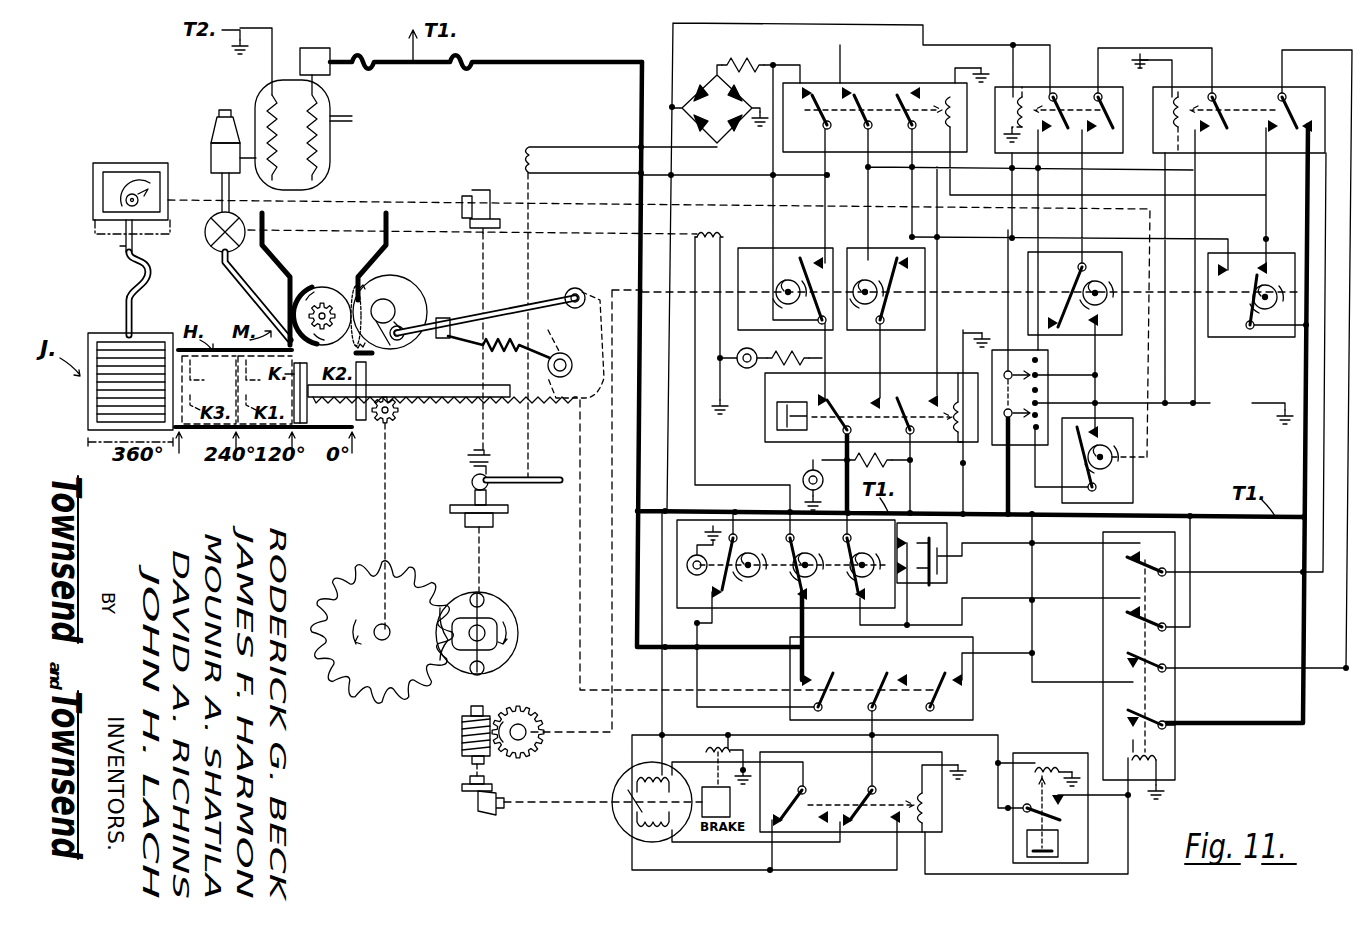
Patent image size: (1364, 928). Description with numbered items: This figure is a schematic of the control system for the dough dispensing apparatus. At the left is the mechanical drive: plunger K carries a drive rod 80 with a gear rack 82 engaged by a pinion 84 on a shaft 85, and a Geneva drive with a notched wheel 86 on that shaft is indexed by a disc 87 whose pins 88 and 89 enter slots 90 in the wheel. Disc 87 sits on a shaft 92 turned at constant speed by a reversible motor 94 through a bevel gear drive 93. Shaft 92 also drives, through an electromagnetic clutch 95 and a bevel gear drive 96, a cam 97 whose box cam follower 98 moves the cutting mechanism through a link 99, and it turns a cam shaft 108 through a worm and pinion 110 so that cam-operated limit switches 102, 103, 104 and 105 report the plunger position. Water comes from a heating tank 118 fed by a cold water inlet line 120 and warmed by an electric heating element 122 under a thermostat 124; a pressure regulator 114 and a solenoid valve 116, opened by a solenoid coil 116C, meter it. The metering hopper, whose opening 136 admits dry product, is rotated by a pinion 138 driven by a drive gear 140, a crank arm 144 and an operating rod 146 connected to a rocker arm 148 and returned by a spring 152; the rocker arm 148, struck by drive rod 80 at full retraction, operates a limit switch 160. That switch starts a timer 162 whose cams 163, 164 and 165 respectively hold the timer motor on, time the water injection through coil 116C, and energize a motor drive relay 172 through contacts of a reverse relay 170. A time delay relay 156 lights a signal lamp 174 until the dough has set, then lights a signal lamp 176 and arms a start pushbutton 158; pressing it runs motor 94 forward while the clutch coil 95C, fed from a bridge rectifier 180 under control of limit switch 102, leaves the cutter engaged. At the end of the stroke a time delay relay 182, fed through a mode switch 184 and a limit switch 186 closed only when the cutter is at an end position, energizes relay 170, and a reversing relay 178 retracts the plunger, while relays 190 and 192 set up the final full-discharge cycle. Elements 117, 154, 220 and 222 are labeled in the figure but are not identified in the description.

The drive rod 80 is at (418, 390).
The gear rack 82 is at (445, 414).
The pinion 84 is at (402, 414).
The shaft 85 is at (385, 448).
The notched wheel 86 is at (355, 700).
The disc 87 is at (512, 612).
The pin 88 is at (482, 594).
The pin 89 is at (490, 671).
The slots 90 is at (428, 696).
The shaft 92 is at (478, 706).
The bevel gear drive 93 is at (466, 796).
The motor 94 is at (614, 818).
The electromagnetic clutch 95 is at (462, 500).
The clutch solenoid coil 95C is at (533, 149).
The bevel gear drive 96 is at (462, 199).
The cam 97 is at (128, 181).
The box cam follower 98 is at (100, 186).
The link 99 is at (91, 289).
The limit switch 102 is at (816, 330).
The limit switch 103 is at (898, 330).
The limit switch 104 is at (1112, 333).
The limit switch 105 is at (1262, 338).
The cam shaft 108 is at (628, 290).
The worm and pinion 110 is at (462, 740).
The pressure regulator 114 is at (221, 132).
The solenoid valve 116 is at (214, 248).
The solenoid coil 116C is at (712, 232).
The conduit 117 is at (224, 272).
The water heating tank 118 is at (321, 156).
The cold water inlet line 120 is at (358, 119).
The electric heating element 122 is at (314, 138).
The thermostat 124 is at (320, 68).
The opening 136 is at (284, 296).
The pinion 138 is at (320, 302).
The drive gear 140 is at (384, 282).
The crank arm 144 is at (393, 310).
The operating rod 146 is at (478, 316).
The rocker arm 148 is at (568, 292).
The spring 152 is at (491, 362).
The lever 154 is at (555, 398).
The time delay relay 156 is at (766, 432).
The start pushbutton 158 is at (947, 568).
The limit switch 160 is at (790, 672).
The timer 162 is at (768, 607).
The timer cam 163 is at (747, 563).
The timer cam 164 is at (814, 564).
The timer cam 165 is at (871, 564).
The reverse relay 170 is at (1103, 708).
The motor drive relay 172 is at (880, 86).
The signal lamp 174 is at (771, 370).
The signal lamp 176 is at (804, 478).
The reversing relay 178 is at (873, 792).
The bridge rectifier 180 is at (712, 92).
The time delay relay 182 is at (1013, 853).
The mode switch 184 is at (1042, 377).
The limit switch 186 is at (1120, 497).
The relay 190 is at (1260, 88).
The relay 192 is at (1080, 88).
The conduit 220 is at (125, 316).
The connector 222 is at (118, 246).